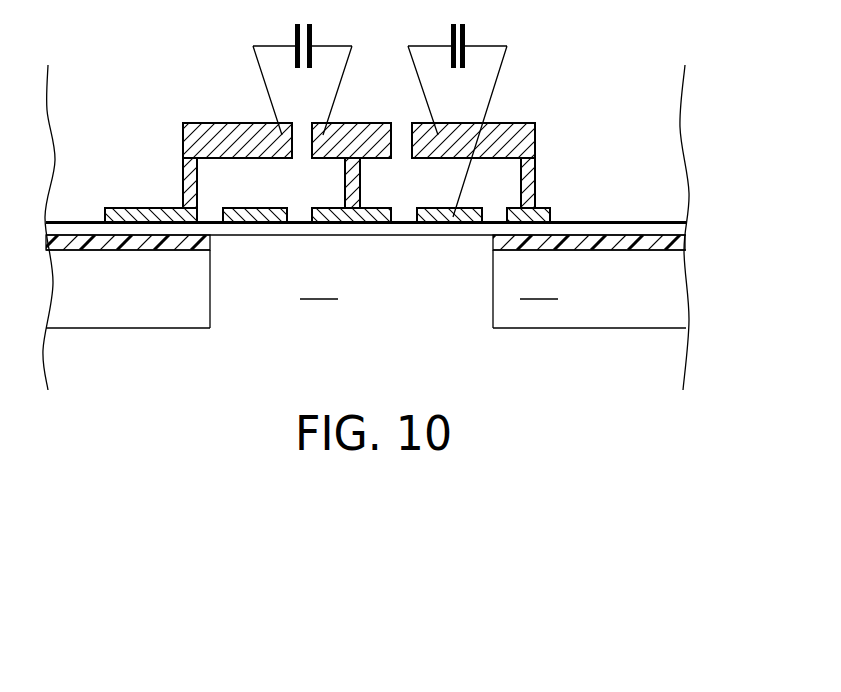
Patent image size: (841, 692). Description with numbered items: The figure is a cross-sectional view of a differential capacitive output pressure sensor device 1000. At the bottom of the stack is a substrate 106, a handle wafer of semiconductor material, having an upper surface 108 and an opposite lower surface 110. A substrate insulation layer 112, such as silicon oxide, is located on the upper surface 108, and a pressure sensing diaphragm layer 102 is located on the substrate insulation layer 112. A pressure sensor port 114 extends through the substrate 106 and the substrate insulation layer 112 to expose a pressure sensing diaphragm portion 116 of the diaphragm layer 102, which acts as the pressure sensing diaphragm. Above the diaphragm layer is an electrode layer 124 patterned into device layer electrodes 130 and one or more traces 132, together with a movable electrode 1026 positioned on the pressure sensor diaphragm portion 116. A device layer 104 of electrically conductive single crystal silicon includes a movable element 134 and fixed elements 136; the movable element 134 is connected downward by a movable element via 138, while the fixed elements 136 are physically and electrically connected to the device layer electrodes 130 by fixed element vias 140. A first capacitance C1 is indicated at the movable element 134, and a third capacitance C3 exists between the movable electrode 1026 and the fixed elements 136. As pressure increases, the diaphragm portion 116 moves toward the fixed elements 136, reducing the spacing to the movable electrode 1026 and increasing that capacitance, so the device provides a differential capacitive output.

The differential capacitive output pressure sensor device 1000 is at (391, 217).
The pressure sensing diaphragm layer 102 is at (705, 227).
The device layer 104 is at (360, 143).
The substrate 106 is at (613, 327).
The upper surface 108 is at (644, 252).
The lower surface 110 is at (366, 289).
The substrate insulation layer 112 is at (392, 258).
The pressure sensor port 114 is at (351, 289).
The pressure sensing diaphragm portion 116 is at (392, 250).
The electrode layer 124 is at (367, 192).
The device layer electrode 130 is at (195, 213).
The trace 132 is at (380, 210).
The movable element 134 is at (375, 130).
The fixed element 136 is at (213, 130).
The movable element via 138 is at (349, 181).
The fixed element via 140 is at (187, 180).
The movable electrode 1026 is at (258, 223).
The first capacitance C1 is at (302, 76).
The third capacitance C3 is at (457, 117).